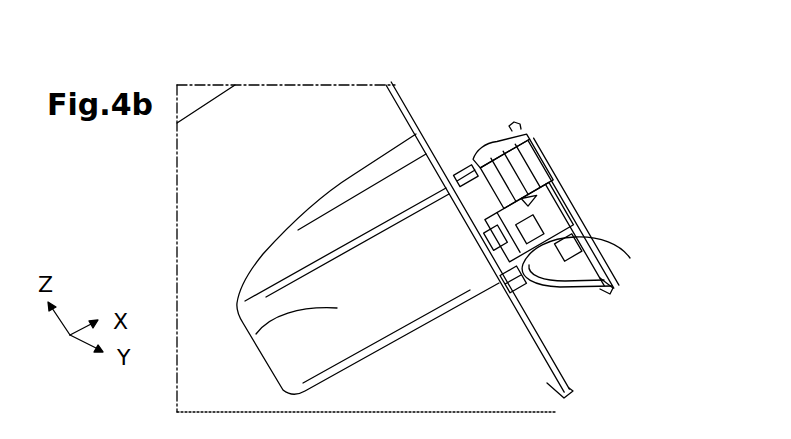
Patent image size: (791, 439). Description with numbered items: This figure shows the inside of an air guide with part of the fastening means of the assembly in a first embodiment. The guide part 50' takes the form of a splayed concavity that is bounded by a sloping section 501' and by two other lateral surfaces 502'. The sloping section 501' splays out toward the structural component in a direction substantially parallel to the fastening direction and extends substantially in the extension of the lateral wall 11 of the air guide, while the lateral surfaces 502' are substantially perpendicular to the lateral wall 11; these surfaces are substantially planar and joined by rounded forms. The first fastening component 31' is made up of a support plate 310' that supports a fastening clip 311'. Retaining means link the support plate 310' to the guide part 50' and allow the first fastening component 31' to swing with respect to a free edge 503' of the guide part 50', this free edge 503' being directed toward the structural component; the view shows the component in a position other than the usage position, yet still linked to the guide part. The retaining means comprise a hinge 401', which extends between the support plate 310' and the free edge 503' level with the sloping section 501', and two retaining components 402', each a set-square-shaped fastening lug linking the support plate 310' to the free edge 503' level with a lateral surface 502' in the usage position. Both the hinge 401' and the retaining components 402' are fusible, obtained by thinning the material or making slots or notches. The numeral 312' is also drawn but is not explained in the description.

The lateral wall 11 is at (547, 384).
The guide part 50' is at (357, 259).
The sloping section 501' is at (262, 335).
The lateral surfaces 502' is at (358, 256).
The free edge 503' is at (558, 302).
The first fastening component 31' is at (569, 168).
The support plate 310' is at (472, 123).
The fastening clip 311' is at (530, 161).
The hinge 401' is at (610, 262).
The retaining component 402' is at (610, 233).
The connector element 312' is at (62, 435).